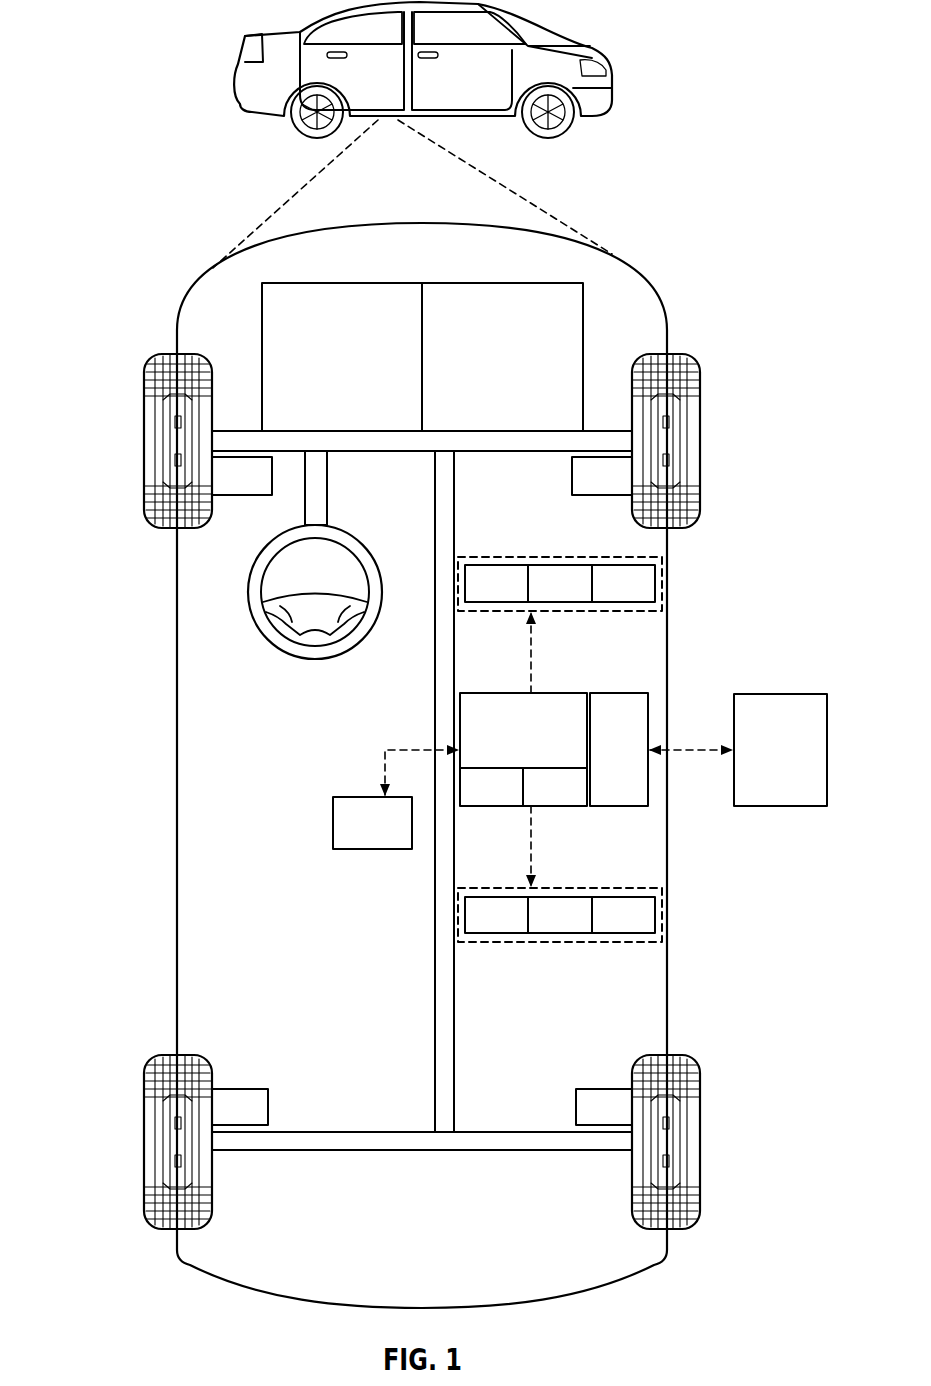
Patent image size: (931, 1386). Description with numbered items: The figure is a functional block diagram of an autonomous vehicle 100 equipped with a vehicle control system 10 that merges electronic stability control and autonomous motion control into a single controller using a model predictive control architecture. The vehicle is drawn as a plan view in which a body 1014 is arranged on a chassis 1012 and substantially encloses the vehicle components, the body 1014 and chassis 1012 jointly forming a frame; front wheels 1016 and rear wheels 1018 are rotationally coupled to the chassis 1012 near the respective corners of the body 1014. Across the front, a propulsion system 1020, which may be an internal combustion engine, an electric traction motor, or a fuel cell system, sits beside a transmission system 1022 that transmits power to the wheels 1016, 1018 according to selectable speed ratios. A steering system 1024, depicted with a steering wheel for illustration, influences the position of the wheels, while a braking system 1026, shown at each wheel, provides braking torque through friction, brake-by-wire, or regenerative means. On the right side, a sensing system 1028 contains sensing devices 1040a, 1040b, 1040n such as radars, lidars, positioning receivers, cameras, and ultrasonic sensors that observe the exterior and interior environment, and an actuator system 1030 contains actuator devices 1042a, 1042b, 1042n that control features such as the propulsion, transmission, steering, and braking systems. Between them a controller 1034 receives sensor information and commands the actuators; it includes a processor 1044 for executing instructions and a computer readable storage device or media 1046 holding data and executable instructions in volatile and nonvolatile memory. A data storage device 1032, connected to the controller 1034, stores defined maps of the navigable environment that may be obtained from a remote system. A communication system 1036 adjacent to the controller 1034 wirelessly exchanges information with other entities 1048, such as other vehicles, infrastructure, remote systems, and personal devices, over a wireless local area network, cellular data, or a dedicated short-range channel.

The vehicle 100 is at (243, 52).
The vehicle control system 10 is at (721, 258).
The chassis 1012 is at (435, 957).
The body 1014 is at (177, 850).
The front wheels 1016 is at (143, 437).
The rear wheels 1018 is at (143, 1137).
The propulsion system 1020 is at (377, 334).
The transmission system 1022 is at (526, 334).
The steering system 1024 is at (342, 500).
The braking system 1026 is at (267, 492).
The sensing system 1028 is at (595, 555).
The actuator system 1030 is at (602, 945).
The data storage device 1032 is at (333, 823).
The controller 1034 is at (550, 761).
The communication system 1036 is at (637, 808).
The sensing device 1040a is at (524, 597).
The sensing device 1040b is at (588, 597).
The sensing device 1040n is at (651, 597).
The actuator device 1042a is at (524, 929).
The actuator device 1042b is at (588, 929).
The actuator device 1042n is at (651, 929).
The processor 1044 is at (485, 808).
The computer readable storage device or media 1046 is at (538, 808).
The other entities 1048 is at (807, 761).